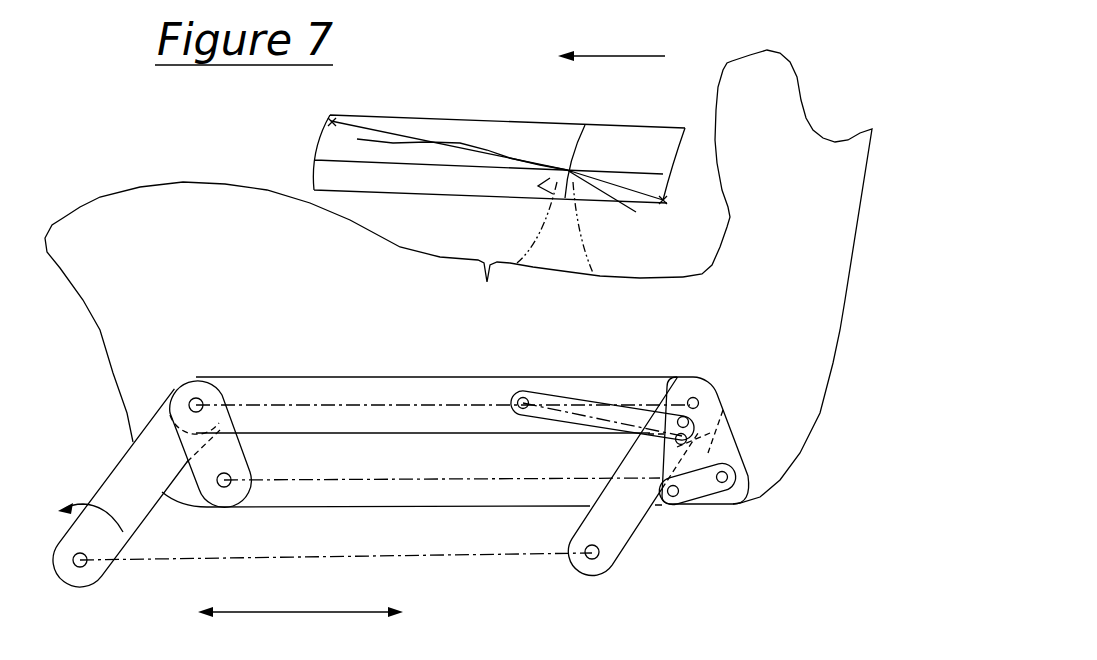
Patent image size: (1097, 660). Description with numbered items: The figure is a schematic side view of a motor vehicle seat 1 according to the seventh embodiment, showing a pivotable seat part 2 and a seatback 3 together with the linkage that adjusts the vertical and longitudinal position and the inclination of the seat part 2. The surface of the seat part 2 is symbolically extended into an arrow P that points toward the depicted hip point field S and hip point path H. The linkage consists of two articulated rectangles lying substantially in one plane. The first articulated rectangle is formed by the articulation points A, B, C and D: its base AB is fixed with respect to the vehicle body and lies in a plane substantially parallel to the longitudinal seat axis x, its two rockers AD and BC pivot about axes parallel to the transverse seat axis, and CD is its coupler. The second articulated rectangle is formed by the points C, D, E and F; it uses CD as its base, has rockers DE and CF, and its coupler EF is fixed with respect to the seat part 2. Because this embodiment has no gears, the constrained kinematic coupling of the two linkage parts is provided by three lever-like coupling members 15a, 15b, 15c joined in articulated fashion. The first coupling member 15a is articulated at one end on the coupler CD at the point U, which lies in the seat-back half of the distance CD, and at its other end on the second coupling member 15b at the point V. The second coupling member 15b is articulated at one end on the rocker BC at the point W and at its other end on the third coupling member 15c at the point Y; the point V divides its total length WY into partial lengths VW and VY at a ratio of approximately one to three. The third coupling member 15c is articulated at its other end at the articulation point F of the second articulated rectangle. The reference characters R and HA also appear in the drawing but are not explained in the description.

The motor vehicle seat 1 is at (78, 100).
The pivotable seat part 2 is at (78, 230).
The seatback 3 is at (790, 108).
The hip point path H is at (392, 145).
The hip point field S is at (640, 138).
The arrow P is at (579, 191).
The direction of movement R is at (623, 55).
The articulation point D is at (200, 402).
The articulation point E is at (222, 488).
The hinge arm HA is at (85, 506).
The articulation point A is at (72, 568).
The first coupling member 15a is at (587, 410).
The second coupling member 15b is at (660, 470).
The third coupling member 15c is at (722, 490).
The articulation point U is at (528, 400).
The articulation point W is at (680, 420).
The pivot point C is at (695, 402).
The articulation point V is at (715, 470).
The articulation point F is at (708, 489).
The articulation point Y is at (673, 497).
The articulation point B is at (587, 560).
The longitudinal seat axis x is at (302, 623).